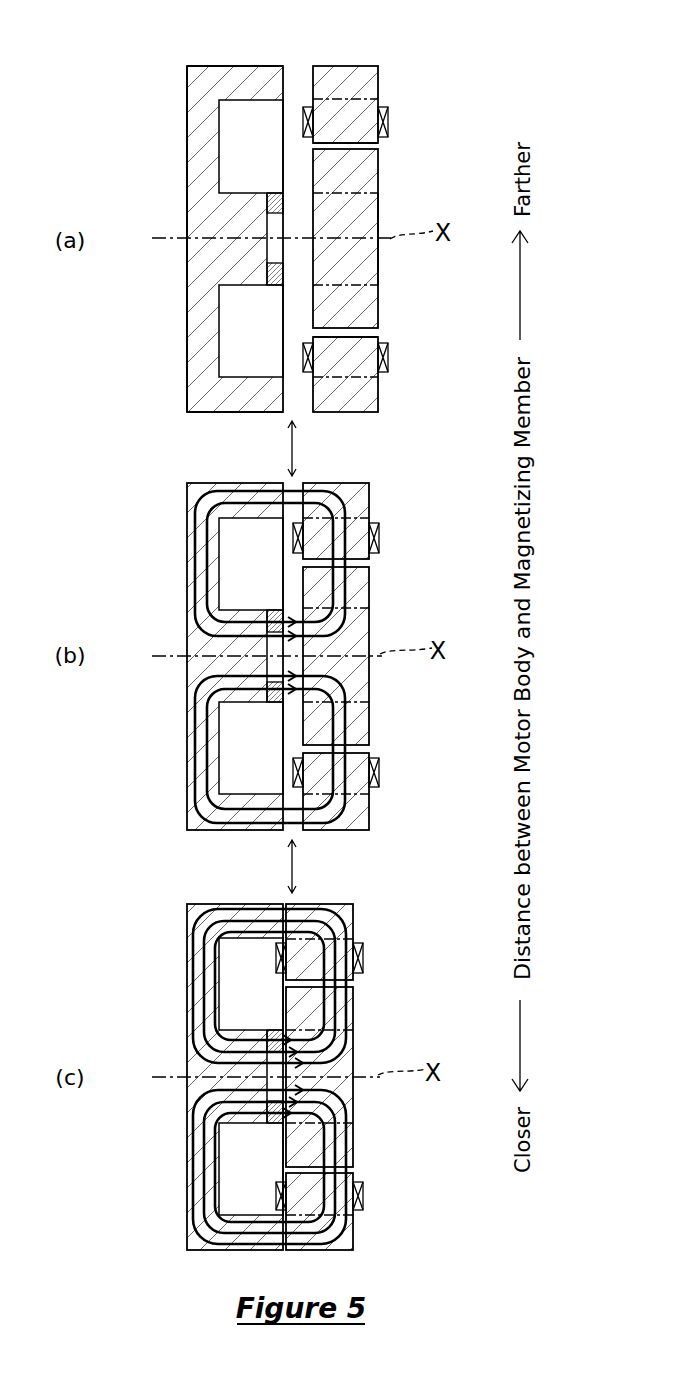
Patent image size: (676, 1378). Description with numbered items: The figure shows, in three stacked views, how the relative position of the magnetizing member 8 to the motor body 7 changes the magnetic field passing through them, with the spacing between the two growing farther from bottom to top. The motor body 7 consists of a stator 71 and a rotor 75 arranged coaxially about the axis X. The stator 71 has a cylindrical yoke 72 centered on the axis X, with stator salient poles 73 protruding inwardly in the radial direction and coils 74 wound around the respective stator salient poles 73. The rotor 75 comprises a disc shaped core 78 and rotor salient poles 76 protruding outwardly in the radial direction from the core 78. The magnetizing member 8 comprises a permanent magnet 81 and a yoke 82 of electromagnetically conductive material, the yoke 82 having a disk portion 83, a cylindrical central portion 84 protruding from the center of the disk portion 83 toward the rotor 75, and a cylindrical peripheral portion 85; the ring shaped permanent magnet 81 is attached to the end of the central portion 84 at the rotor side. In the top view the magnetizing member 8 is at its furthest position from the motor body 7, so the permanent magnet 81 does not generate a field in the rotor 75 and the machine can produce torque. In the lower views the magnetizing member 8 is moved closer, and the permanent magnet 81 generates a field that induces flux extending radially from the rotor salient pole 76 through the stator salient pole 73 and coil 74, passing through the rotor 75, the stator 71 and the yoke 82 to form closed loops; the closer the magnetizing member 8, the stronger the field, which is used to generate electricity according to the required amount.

The motor body 7 is at (362, 629).
The magnetizing member 8 is at (223, 64).
The stator 71 is at (379, 80).
The yoke 72 is at (355, 412).
The stator salient pole 73 is at (377, 139).
The coil 74 is at (389, 122).
The rotor 75 is at (378, 253).
The rotor salient pole 76 is at (380, 172).
The core 78 is at (380, 202).
The permanent magnet 81 is at (275, 193).
The yoke 82 is at (267, 66).
The disk portion 83 is at (189, 174).
The central portion 84 is at (242, 193).
The peripheral portion 85 is at (248, 412).